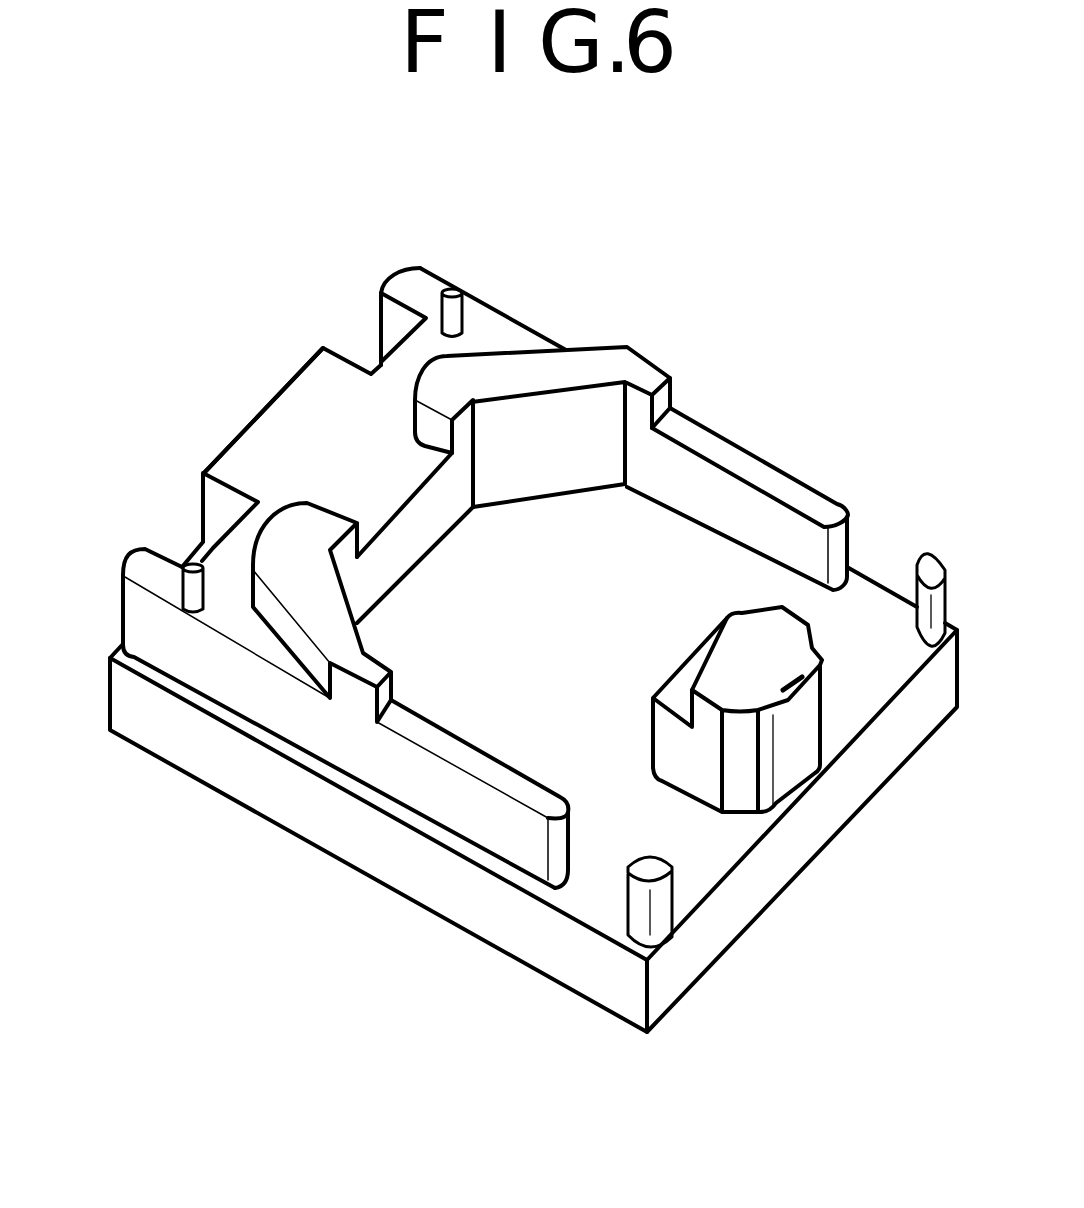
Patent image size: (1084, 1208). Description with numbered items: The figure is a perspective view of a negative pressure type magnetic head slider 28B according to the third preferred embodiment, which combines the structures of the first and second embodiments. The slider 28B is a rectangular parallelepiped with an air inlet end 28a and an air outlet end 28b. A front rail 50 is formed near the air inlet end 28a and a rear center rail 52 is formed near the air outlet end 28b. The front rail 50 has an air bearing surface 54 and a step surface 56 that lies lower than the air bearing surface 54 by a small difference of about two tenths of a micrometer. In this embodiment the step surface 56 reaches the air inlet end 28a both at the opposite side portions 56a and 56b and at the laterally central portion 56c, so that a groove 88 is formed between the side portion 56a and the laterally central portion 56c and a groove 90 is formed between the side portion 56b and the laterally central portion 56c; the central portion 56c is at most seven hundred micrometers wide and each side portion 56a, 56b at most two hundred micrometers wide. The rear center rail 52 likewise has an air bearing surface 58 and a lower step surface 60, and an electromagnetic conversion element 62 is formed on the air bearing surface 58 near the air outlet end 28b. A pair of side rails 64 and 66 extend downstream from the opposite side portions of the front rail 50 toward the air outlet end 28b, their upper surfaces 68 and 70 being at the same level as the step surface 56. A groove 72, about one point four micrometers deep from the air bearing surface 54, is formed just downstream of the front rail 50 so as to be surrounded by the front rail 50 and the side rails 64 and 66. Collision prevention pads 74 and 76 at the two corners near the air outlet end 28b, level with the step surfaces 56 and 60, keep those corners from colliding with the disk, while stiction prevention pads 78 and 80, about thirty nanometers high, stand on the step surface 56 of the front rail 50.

The magnetic head slider 28B is at (541, 314).
The air inlet end 28a is at (262, 407).
The air outlet end 28b is at (750, 888).
The front rail 50 is at (253, 695).
The rear center rail 52 is at (800, 745).
The air bearing surface 54 is at (616, 356).
The step surface 56 is at (388, 500).
The opposite side portion 56a is at (132, 568).
The opposite side portion 56b is at (407, 284).
The laterally central portion 56c is at (289, 400).
The air bearing surface 58 is at (723, 660).
The step surface 60 is at (670, 688).
The electromagnetic conversion element 62 is at (803, 677).
The side rail 64 is at (405, 787).
The side rail 66 is at (795, 478).
The upper surface 68 is at (475, 765).
The upper surface 70 is at (723, 452).
The groove 72 is at (582, 642).
The collision prevention pad 74 is at (645, 862).
The collision prevention pad 76 is at (928, 562).
The stiction prevention pad 78 is at (187, 566).
The stiction prevention pad 80 is at (448, 284).
The groove 88 is at (201, 473).
The groove 90 is at (396, 349).